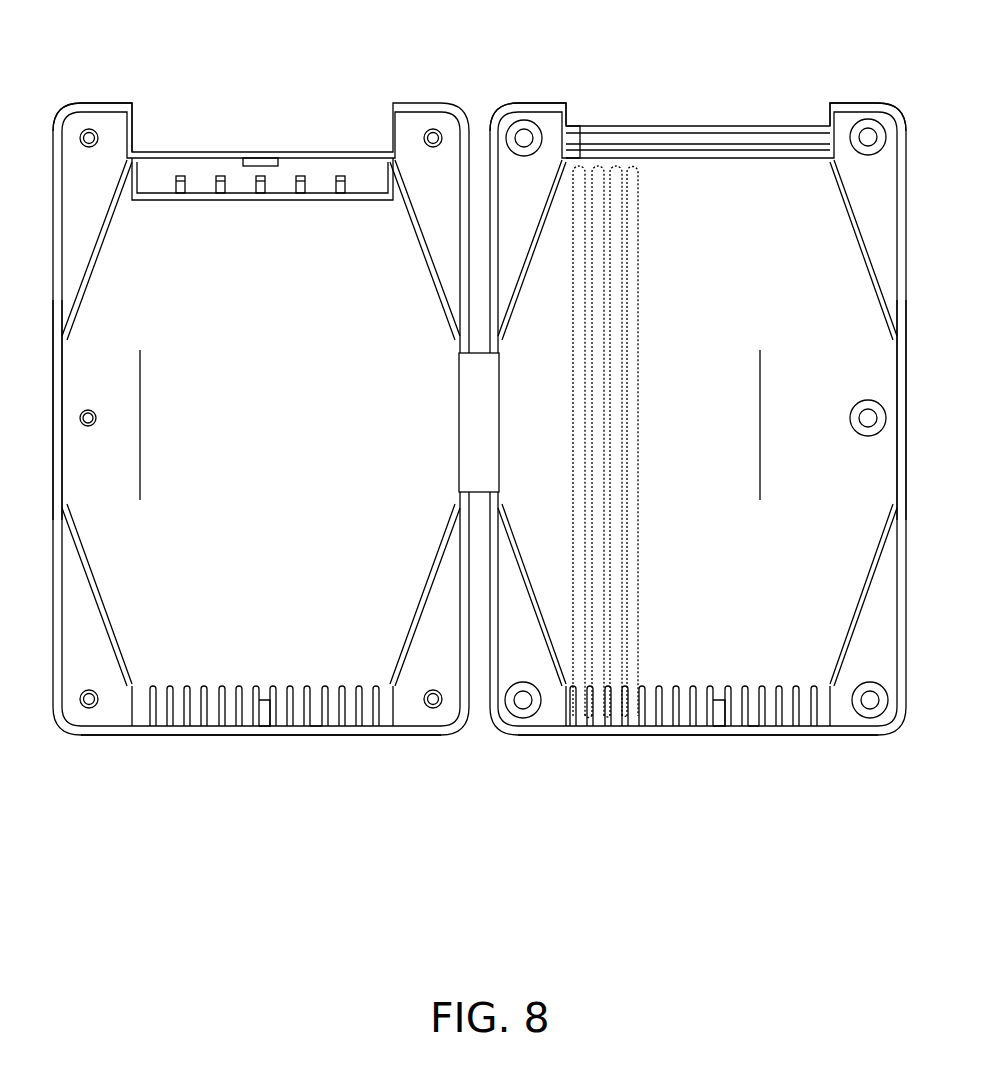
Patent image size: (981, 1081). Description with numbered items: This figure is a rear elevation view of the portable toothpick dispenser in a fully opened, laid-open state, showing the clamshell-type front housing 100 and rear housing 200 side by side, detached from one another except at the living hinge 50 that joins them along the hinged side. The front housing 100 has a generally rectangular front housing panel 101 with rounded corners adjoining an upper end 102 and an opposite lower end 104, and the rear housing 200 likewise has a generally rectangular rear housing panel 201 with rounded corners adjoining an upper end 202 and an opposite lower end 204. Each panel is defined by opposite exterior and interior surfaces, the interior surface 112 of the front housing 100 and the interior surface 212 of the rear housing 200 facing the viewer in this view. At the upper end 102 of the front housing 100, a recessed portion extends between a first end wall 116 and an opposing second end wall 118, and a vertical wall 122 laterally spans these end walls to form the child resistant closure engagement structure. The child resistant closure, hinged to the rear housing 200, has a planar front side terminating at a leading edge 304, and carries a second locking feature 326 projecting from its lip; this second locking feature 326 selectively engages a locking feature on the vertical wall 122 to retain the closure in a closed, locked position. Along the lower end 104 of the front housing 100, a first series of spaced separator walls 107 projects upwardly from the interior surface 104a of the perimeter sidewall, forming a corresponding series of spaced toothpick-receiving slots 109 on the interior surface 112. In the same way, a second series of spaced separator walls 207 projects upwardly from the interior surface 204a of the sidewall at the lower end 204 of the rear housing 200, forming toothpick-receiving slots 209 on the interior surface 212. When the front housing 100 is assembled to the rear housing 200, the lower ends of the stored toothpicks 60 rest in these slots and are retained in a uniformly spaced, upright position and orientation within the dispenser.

The front housing 100 is at (690, 808).
The rear housing 200 is at (230, 808).
The living hinge 50 is at (479, 422).
The front housing panel 101 is at (812, 345).
The rear housing panel 201 is at (140, 336).
The upper end 102 is at (533, 102).
The upper end 202 is at (96, 101).
The lower end 104 is at (598, 736).
The interior surface 104a is at (753, 722).
The lower end 204 is at (150, 736).
The interior surface 204a is at (318, 722).
The first series of spaced separator walls 107 is at (677, 686).
The toothpick-receiving slots 109 is at (718, 688).
The second series of spaced separator walls 207 is at (222, 686).
The toothpick-receiving slots 209 is at (264, 688).
The interior surface 112 is at (732, 425).
The interior surface 212 is at (215, 425).
The first end wall 116 is at (826, 113).
The second end wall 118 is at (568, 120).
The vertical wall 122 is at (648, 126).
The leading edge 304 is at (192, 151).
The second locking feature 326 is at (258, 157).
The toothpicks 60 is at (638, 290).